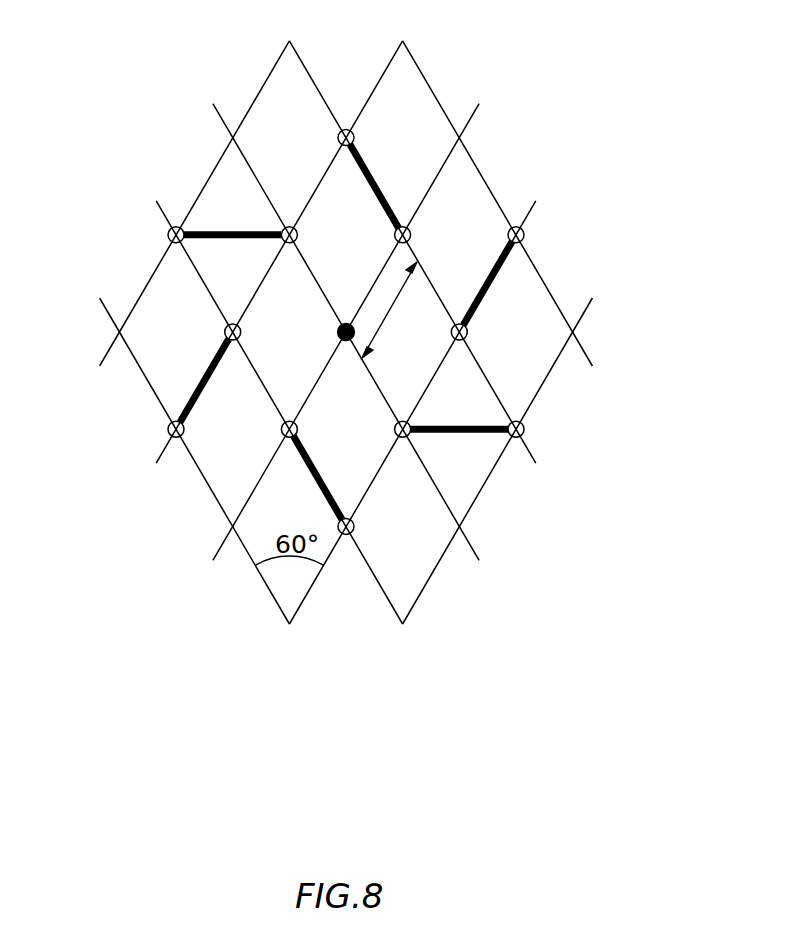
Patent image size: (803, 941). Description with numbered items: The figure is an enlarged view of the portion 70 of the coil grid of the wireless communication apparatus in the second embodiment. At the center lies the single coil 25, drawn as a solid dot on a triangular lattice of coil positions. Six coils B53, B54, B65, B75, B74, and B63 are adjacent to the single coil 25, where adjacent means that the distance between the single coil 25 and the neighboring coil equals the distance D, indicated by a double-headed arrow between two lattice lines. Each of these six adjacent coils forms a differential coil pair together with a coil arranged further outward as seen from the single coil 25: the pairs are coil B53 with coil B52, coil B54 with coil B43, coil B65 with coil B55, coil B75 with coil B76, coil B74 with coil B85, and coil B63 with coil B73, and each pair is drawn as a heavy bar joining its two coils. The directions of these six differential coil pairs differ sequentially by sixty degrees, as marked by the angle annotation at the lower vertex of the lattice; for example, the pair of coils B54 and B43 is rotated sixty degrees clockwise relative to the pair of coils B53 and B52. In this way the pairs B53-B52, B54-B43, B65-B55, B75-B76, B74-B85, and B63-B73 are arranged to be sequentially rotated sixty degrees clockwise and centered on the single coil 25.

The portion 70 is at (358, 790).
The single coil 25 is at (337, 335).
The distance D is at (389, 310).
The coil B43 is at (176, 227).
The coil B52 is at (167, 430).
The coil B53 is at (224, 333).
The coil B54 is at (289, 227).
The coil B55 is at (354, 138).
The coil B63 is at (281, 430).
The coil B65 is at (411, 235).
The coil B73 is at (346, 535).
The coil B74 is at (403, 438).
The coil B75 is at (468, 333).
The coil B76 is at (525, 234).
The coil B85 is at (525, 430).